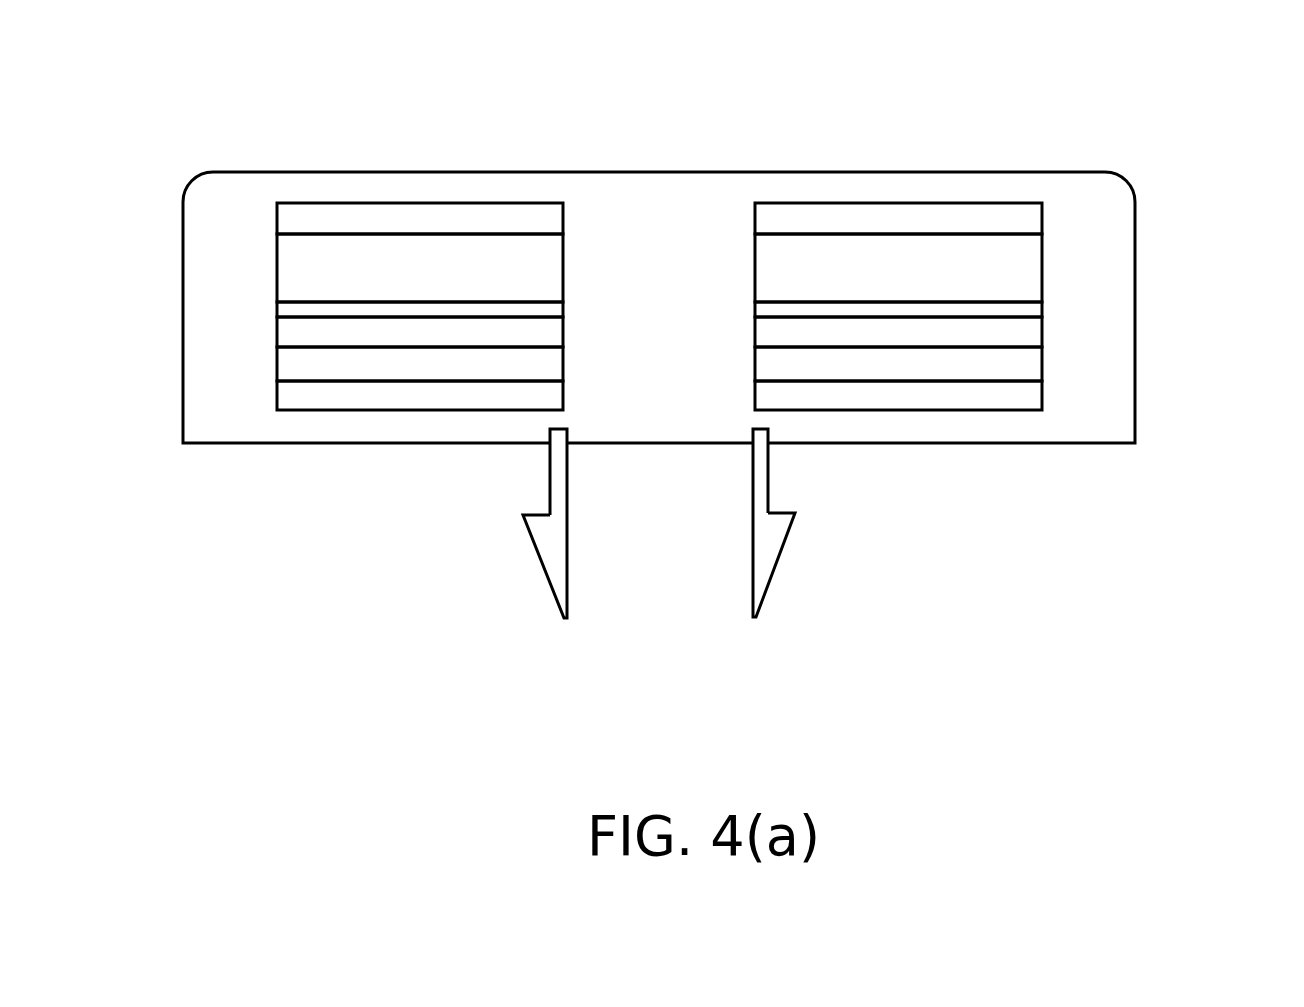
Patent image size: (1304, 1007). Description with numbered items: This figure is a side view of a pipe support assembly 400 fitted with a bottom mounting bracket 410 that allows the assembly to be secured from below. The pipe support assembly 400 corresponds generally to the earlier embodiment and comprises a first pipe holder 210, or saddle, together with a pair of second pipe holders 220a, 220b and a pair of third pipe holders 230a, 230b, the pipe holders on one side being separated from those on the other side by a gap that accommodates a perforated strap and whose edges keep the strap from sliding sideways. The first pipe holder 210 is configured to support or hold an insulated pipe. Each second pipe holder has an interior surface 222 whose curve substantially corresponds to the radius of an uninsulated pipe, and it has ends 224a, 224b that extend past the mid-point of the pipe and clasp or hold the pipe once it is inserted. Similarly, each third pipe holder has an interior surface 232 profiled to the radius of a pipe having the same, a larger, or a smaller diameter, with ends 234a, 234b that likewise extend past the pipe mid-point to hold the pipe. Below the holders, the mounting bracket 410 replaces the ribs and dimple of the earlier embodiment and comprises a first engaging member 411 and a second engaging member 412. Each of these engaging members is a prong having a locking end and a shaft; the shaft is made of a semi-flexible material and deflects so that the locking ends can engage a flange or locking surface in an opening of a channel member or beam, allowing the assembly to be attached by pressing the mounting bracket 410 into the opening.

The pipe support assembly 400 is at (1150, 157).
The first pipe holder 210 is at (526, 172).
The second pipe holder 220a is at (547, 259).
The second pipe holder 220b is at (1062, 253).
The interior surface 222 is at (448, 283).
The end 224a is at (755, 214).
The end 224b is at (755, 310).
The third pipe holder 230a is at (546, 411).
The third pipe holder 230b is at (1066, 361).
The interior surface 232 is at (404, 365).
The end 234a is at (755, 337).
The end 234b is at (755, 395).
The first engaging member 411 is at (477, 559).
The second engaging member 412 is at (836, 556).
The mounting bracket 410 is at (630, 610).